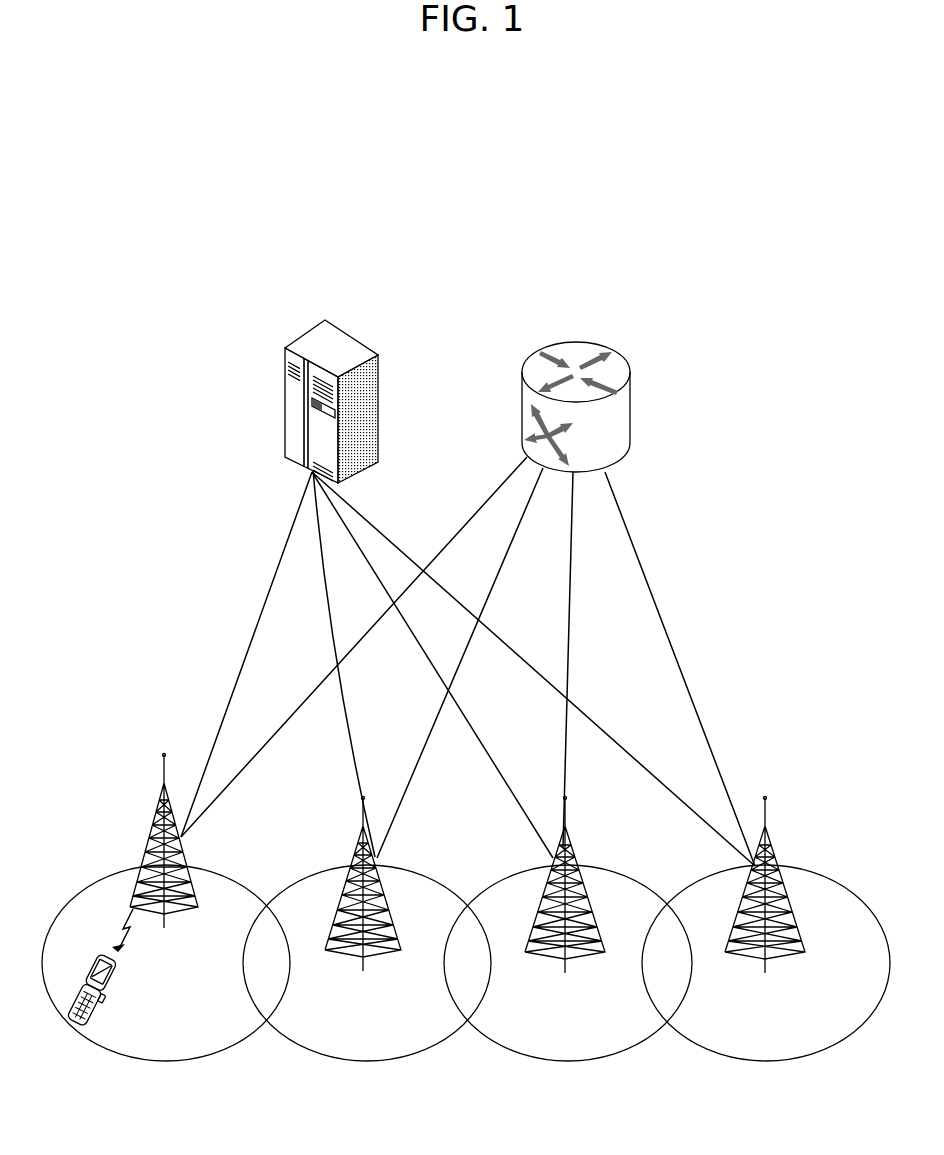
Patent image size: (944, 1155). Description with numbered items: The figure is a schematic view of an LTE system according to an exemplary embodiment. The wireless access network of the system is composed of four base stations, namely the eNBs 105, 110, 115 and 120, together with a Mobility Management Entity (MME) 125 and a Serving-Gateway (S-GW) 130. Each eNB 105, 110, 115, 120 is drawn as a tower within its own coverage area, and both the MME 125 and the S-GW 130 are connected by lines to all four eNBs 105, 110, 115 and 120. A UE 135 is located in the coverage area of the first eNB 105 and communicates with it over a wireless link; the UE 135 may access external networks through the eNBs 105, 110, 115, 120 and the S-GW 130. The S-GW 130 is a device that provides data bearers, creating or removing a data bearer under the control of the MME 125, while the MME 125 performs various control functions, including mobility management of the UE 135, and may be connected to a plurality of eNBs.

The eNB 105 is at (150, 818).
The eNB 110 is at (358, 852).
The eNB 115 is at (575, 842).
The eNB 120 is at (775, 842).
The Mobility Management Entity (MME) 125 is at (318, 343).
The Serving-Gateway (S-GW) 130 is at (572, 350).
The UE 135 is at (110, 990).